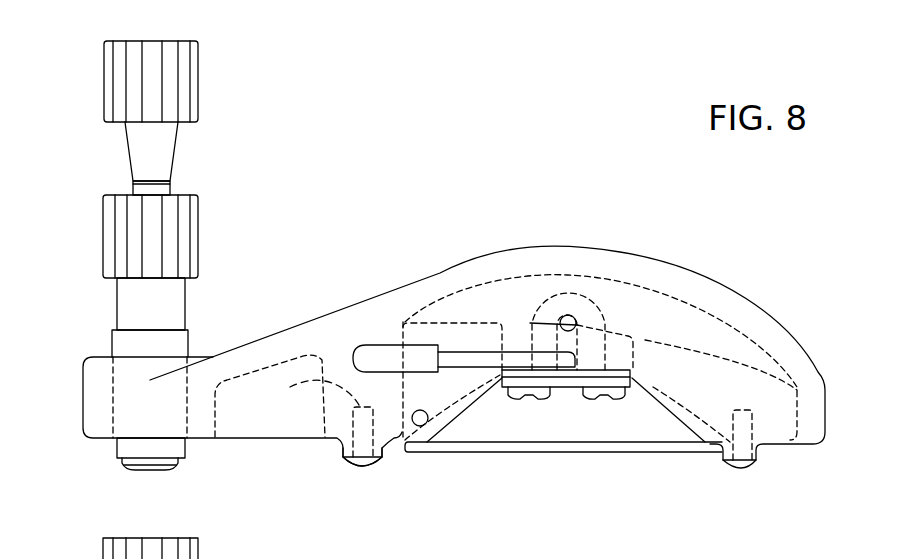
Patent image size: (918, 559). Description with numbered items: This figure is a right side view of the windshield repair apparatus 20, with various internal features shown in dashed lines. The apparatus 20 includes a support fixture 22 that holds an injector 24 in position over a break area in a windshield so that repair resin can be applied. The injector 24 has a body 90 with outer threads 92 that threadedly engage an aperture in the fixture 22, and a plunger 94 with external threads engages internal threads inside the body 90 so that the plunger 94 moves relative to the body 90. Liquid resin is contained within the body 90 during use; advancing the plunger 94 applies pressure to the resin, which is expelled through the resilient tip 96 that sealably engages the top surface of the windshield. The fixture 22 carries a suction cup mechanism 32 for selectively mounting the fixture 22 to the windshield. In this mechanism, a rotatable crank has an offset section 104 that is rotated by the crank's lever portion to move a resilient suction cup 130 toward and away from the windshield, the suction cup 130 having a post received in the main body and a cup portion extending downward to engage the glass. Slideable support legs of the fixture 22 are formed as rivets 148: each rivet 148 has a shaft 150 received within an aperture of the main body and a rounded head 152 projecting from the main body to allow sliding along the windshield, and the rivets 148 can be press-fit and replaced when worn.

The windshield repair apparatus 20 is at (395, 193).
The support apparatus or fixture 22 is at (597, 250).
The injector 24 is at (198, 77).
The suction cup mechanism 32 is at (563, 453).
The body 90 is at (198, 233).
The outer threads 92 is at (188, 346).
The plunger 94 is at (130, 153).
The resilient tip 96 is at (133, 470).
The offset section 104 is at (577, 320).
The resilient suction cup 130 is at (648, 453).
The rivet 148 is at (380, 467).
The shaft 150 is at (297, 398).
The head 152 is at (380, 500).